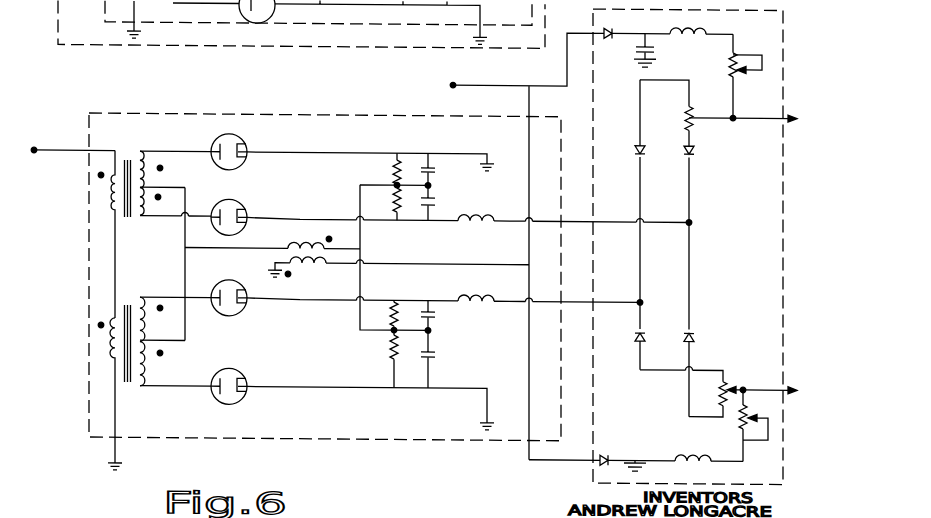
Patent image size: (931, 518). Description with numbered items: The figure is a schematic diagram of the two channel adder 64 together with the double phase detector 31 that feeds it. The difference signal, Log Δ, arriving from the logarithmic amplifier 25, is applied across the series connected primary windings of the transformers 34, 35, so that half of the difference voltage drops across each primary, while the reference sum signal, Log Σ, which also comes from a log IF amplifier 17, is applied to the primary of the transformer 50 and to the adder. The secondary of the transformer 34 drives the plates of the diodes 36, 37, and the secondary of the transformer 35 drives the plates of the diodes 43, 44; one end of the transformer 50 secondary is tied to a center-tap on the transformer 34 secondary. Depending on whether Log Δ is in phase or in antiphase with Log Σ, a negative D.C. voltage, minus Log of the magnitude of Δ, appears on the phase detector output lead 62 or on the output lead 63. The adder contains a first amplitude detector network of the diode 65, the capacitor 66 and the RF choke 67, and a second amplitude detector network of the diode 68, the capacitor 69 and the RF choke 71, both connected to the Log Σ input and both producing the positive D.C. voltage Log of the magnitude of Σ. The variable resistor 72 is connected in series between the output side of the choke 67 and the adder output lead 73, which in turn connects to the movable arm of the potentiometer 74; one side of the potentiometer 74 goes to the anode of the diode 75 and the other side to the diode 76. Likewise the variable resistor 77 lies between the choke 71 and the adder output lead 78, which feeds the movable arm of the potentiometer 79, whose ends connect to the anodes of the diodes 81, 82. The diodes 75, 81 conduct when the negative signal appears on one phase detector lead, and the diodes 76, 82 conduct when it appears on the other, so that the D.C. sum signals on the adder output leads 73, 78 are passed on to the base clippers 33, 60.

The log IF amplifier (log sigma input) 17 is at (463, 245).
The logarithmic amplifier 25 is at (60, 146).
The double phase detector 31 is at (405, 115).
The base clipper 33 is at (747, 131).
The transformer 34 is at (154, 223).
The transformer 35 is at (154, 373).
The diode 36 is at (243, 204).
The diode 37 is at (245, 147).
The diode 43 is at (238, 306).
The diode 44 is at (240, 371).
The transformer 50 is at (357, 257).
The base clipper 60 is at (747, 365).
The phase detector output lead 62 is at (674, 200).
The output lead 63 is at (624, 274).
The two channel adder 64 is at (786, 24).
The diode 65 is at (614, 27).
The capacitor 66 is at (653, 43).
The RF choke 67 is at (694, 33).
The diode 68 is at (604, 453).
The capacitor 69 is at (648, 465).
The RF choke 71 is at (713, 435).
The variable resistor 72 is at (737, 68).
The adder output lead 73 is at (740, 111).
The potentiometer 74 is at (686, 112).
The diode 75 is at (643, 145).
The diode 76 is at (693, 150).
The variable resistor 77 is at (745, 409).
The adder output lead 78 is at (766, 380).
The potentiometer 79 is at (724, 386).
The diode 81 is at (645, 328).
The diode 82 is at (721, 307).